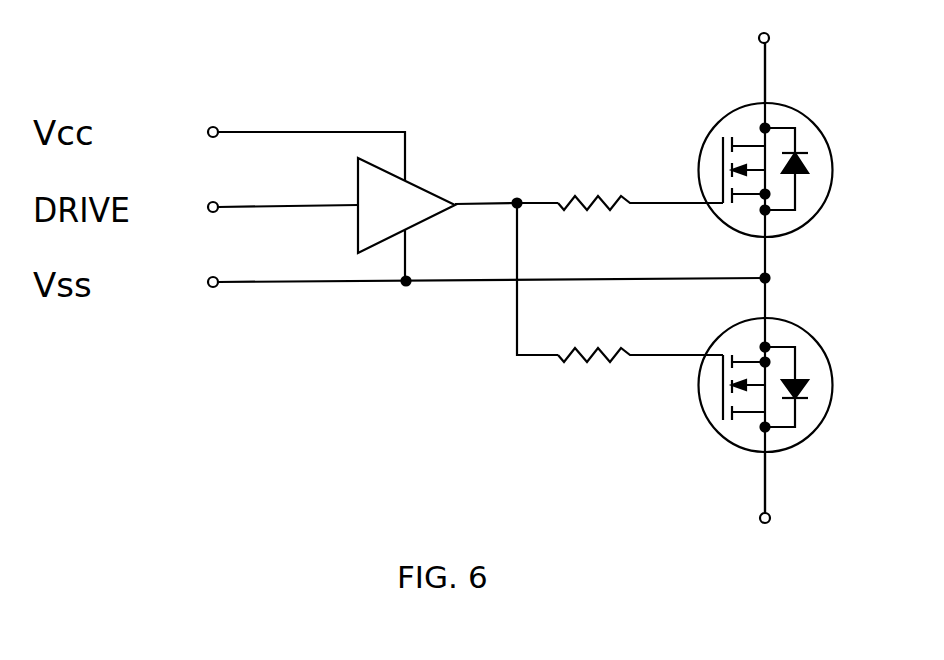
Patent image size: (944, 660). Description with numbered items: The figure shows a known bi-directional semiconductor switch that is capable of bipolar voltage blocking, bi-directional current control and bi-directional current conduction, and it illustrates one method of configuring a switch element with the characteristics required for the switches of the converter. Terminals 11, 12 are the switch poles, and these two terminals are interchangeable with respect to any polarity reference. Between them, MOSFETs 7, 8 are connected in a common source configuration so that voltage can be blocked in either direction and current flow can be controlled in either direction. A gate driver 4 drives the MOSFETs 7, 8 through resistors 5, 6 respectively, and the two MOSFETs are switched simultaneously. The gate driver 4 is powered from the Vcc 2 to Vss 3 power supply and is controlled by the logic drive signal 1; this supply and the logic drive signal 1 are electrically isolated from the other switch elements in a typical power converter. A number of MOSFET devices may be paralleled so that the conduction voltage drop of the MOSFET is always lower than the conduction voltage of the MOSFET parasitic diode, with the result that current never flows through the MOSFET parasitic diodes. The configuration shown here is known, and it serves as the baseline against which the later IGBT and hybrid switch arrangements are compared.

The logic drive signal 1 is at (264, 210).
The Vcc 2 is at (285, 197).
The Vss 3 is at (466, 285).
The gate driver 4 is at (458, 253).
The resistor 5 is at (640, 180).
The resistor 6 is at (640, 335).
The MOSFET 7 is at (750, 170).
The MOSFET 8 is at (750, 385).
The terminal 11 is at (797, 62).
The terminal 12 is at (796, 498).